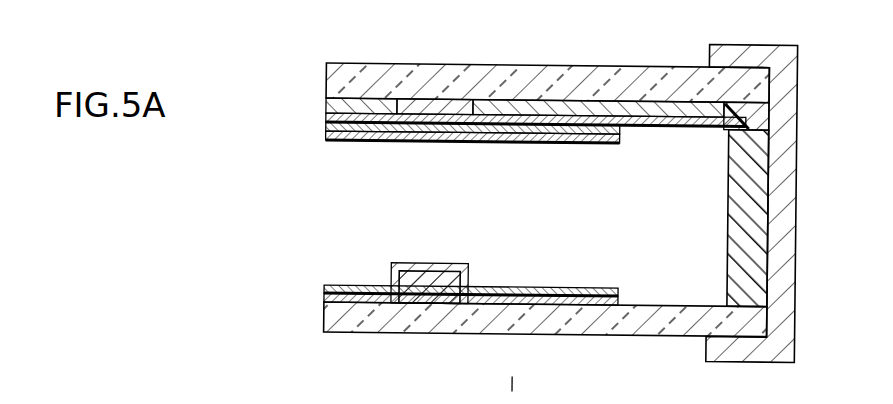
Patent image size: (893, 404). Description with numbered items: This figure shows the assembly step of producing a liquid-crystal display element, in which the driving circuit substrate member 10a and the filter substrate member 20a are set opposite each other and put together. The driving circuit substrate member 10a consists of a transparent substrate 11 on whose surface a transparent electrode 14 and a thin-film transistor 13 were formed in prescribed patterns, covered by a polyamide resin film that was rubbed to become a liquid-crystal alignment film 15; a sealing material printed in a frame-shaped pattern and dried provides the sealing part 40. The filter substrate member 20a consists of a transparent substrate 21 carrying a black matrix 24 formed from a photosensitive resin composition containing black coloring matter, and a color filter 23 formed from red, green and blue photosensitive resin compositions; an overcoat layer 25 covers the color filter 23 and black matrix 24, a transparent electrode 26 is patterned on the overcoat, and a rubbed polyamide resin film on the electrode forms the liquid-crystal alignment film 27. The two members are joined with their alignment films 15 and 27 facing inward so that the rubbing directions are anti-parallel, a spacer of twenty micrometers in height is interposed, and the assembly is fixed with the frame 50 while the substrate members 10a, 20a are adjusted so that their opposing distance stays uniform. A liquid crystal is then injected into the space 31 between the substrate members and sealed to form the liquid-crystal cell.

The driving circuit substrate member 10a is at (488, 278).
The transparent substrate 11 is at (326, 312).
The thin-film transistor 13 is at (414, 276).
The transparent electrode 14 is at (326, 299).
The liquid-crystal alignment film 15 is at (326, 291).
The filter substrate member 20a is at (487, 96).
The transparent substrate 21 is at (340, 82).
The color filter 23 is at (333, 107).
The black matrix 24 is at (440, 106).
The overcoat layer 25 is at (333, 120).
The transparent electrode 26 is at (333, 130).
The liquid-crystal alignment film 27 is at (333, 141).
The space 31 is at (661, 158).
The sealing part 40 is at (732, 193).
The frame 50 is at (797, 78).